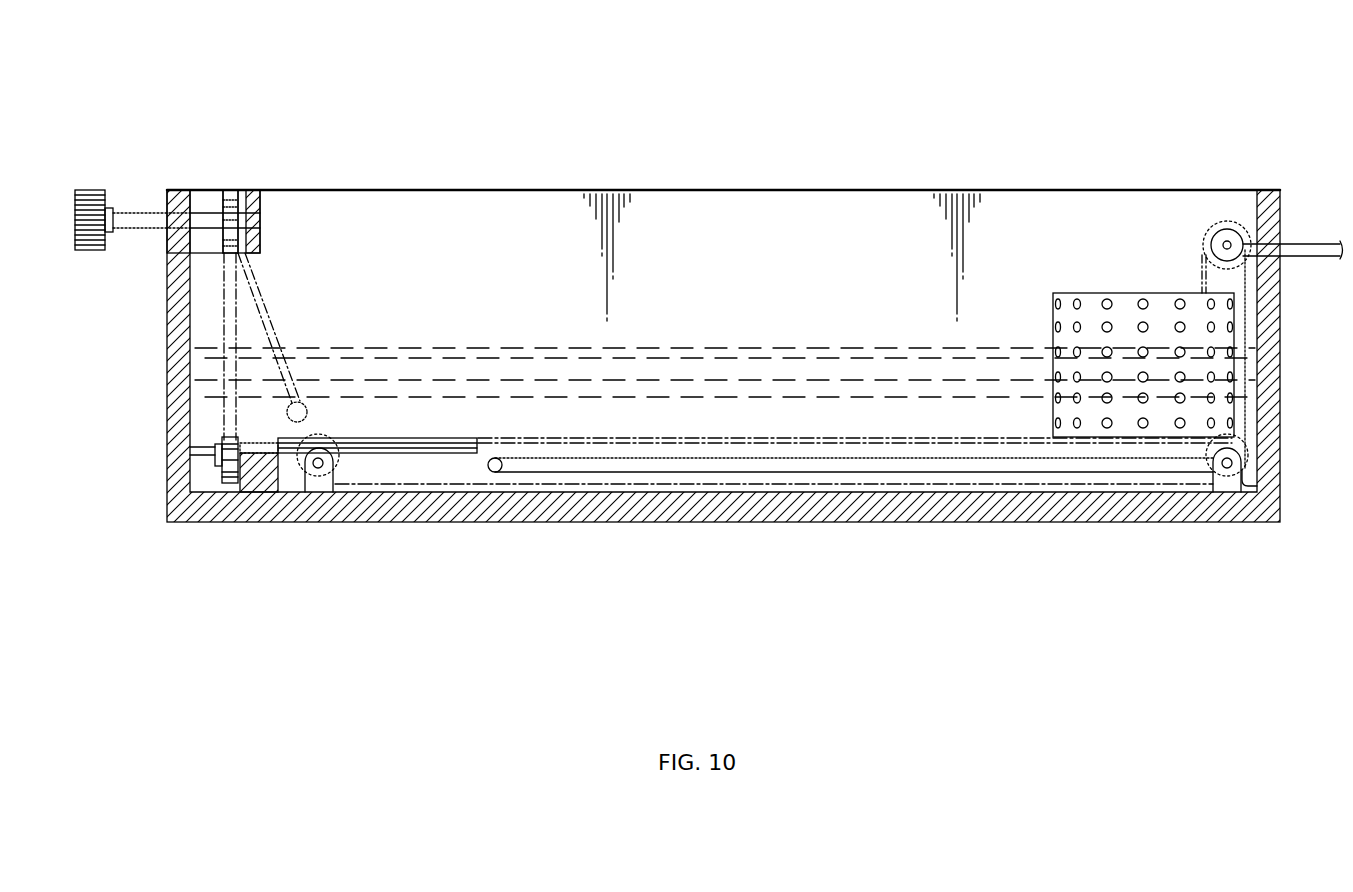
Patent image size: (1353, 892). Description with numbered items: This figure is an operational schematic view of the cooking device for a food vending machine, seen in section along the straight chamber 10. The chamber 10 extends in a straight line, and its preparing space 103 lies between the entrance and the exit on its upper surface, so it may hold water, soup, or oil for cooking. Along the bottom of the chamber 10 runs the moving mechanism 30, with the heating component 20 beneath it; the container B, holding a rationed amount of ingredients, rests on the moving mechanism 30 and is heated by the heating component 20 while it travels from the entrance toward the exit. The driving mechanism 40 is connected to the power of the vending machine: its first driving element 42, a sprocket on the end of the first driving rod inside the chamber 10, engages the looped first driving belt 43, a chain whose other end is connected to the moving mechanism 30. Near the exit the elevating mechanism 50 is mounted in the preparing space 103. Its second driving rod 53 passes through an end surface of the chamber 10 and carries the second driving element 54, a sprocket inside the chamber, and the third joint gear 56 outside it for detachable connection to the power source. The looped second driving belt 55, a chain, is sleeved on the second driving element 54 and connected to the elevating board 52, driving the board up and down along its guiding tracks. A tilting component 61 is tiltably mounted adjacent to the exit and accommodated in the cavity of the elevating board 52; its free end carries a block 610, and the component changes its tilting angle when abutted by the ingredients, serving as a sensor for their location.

The chamber 10 is at (436, 176).
The preparing space 103 is at (558, 197).
The heating component 20 is at (1057, 466).
The moving mechanism 30 is at (778, 432).
The driving mechanism 40 is at (1240, 207).
The first driving element 42 is at (1224, 236).
The first driving belt 43 is at (1198, 252).
The elevating mechanism 50 is at (205, 166).
The elevating board 52 is at (288, 447).
The second driving rod 53 is at (142, 211).
The second driving element 54 is at (232, 192).
The second driving belt 55 is at (222, 303).
The third joint gear 56 is at (90, 191).
The tilting component 61 is at (260, 297).
The block 610 is at (306, 406).
The container B is at (1092, 298).